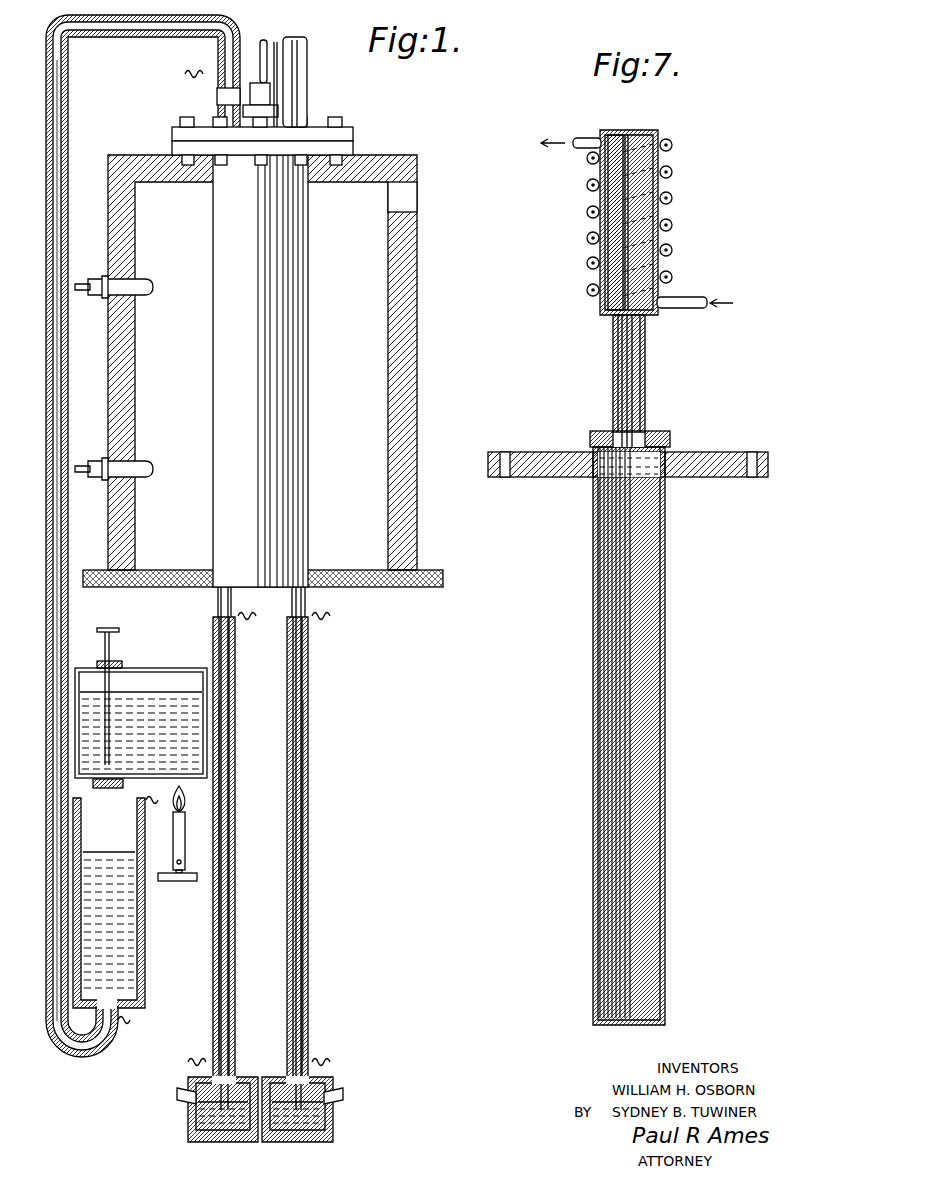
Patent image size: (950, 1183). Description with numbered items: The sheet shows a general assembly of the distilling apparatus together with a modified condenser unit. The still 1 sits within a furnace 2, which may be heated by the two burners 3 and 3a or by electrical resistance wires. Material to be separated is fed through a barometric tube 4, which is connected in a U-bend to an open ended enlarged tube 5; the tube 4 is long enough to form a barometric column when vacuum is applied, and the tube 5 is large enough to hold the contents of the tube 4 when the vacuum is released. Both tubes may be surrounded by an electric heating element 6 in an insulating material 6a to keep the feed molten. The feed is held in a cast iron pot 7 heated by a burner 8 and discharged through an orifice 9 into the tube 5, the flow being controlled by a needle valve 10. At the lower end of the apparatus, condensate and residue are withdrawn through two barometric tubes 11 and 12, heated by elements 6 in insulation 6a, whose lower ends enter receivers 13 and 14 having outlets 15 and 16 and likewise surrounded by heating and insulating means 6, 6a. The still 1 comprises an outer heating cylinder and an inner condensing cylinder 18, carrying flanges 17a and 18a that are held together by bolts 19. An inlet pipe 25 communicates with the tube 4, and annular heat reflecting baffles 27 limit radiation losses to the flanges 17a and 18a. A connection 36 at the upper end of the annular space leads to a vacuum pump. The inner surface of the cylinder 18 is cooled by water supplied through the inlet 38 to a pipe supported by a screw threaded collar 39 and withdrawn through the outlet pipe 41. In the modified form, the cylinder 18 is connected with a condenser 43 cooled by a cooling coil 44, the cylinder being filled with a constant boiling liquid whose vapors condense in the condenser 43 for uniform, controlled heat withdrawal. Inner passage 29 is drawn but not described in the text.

In FIG. 1, the still 1 is at (283, 363).
In FIG. 1, the furnace 2 is at (398, 337).
In FIG. 1, the burner 3 is at (140, 290).
In FIG. 1, the burner 3a is at (140, 465).
In FIG. 1, the barometric tube 4 is at (226, 52).
In FIG. 1, the open ended enlarged tube 5 is at (137, 820).
In FIG. 1, the electric heating element 6 is at (65, 612).
In FIG. 1, the insulating material 6a is at (62, 636).
In FIG. 1, the cast iron pot 7 is at (171, 668).
In FIG. 1, the burner 8 is at (181, 841).
In FIG. 1, the orifice 9 is at (105, 789).
In FIG. 1, the needle valve 10 is at (111, 658).
In FIG. 1, the barometric tube 11 is at (300, 862).
In FIG. 1, the barometric tube 12 is at (228, 990).
In FIG. 1, the receiver 13 is at (331, 1115).
In FIG. 1, the receiver 14 is at (190, 1112).
In FIG. 1, the outlet 15 is at (336, 1092).
In FIG. 1, the outlet 16 is at (186, 1092).
In FIG. 1, the flange 17a is at (342, 149).
In FIG. 7, the inner condensing cylinder 18 is at (664, 734).
In FIG. 1, the flange 18a is at (348, 134).
In FIG. 7, the flange 18a is at (720, 455).
In FIG. 1, the bolts 19 is at (180, 123).
In FIG. 1, the inlet pipe 25 is at (217, 95).
In FIG. 1, the annular heat reflecting vanes or baffles 27 is at (305, 605).
In FIG. 1, the inner tube 29 is at (218, 600).
In FIG. 1, the connection 36 is at (308, 62).
In FIG. 1, the inlet 38 is at (262, 45).
In FIG. 1, the screw threaded collar 39 is at (250, 108).
In FIG. 1, the outlet pipe 41 is at (277, 45).
In FIG. 7, the condenser 43 is at (660, 235).
In FIG. 7, the cooling coil 44 is at (672, 171).